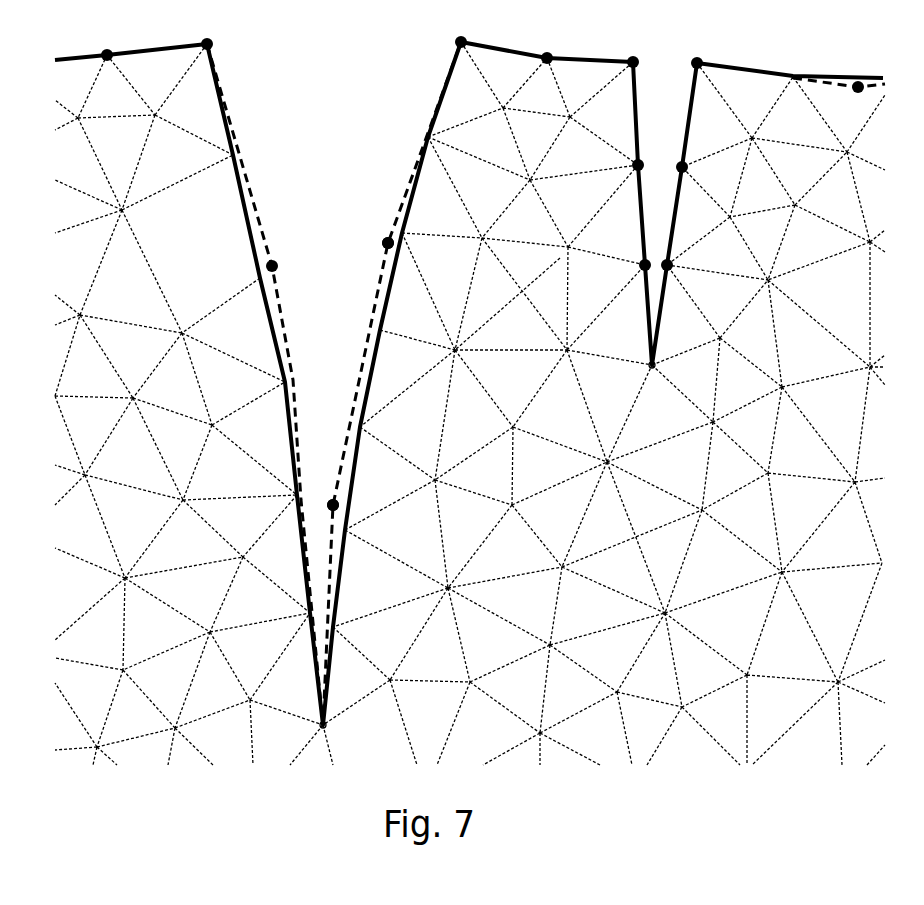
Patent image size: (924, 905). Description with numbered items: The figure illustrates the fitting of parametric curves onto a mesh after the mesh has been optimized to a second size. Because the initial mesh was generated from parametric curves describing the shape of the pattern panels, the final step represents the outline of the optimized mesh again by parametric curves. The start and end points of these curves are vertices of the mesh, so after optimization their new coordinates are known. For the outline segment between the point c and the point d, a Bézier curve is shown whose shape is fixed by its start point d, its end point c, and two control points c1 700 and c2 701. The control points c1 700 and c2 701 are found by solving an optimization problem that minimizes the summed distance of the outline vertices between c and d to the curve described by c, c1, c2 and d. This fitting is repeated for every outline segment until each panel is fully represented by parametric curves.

The control point c1 700 is at (333, 499).
The control point c2 701 is at (388, 236).
The end point c is at (339, 728).
The control point c1 is at (358, 494).
The control point c2 is at (371, 239).
The start point d is at (456, 24).